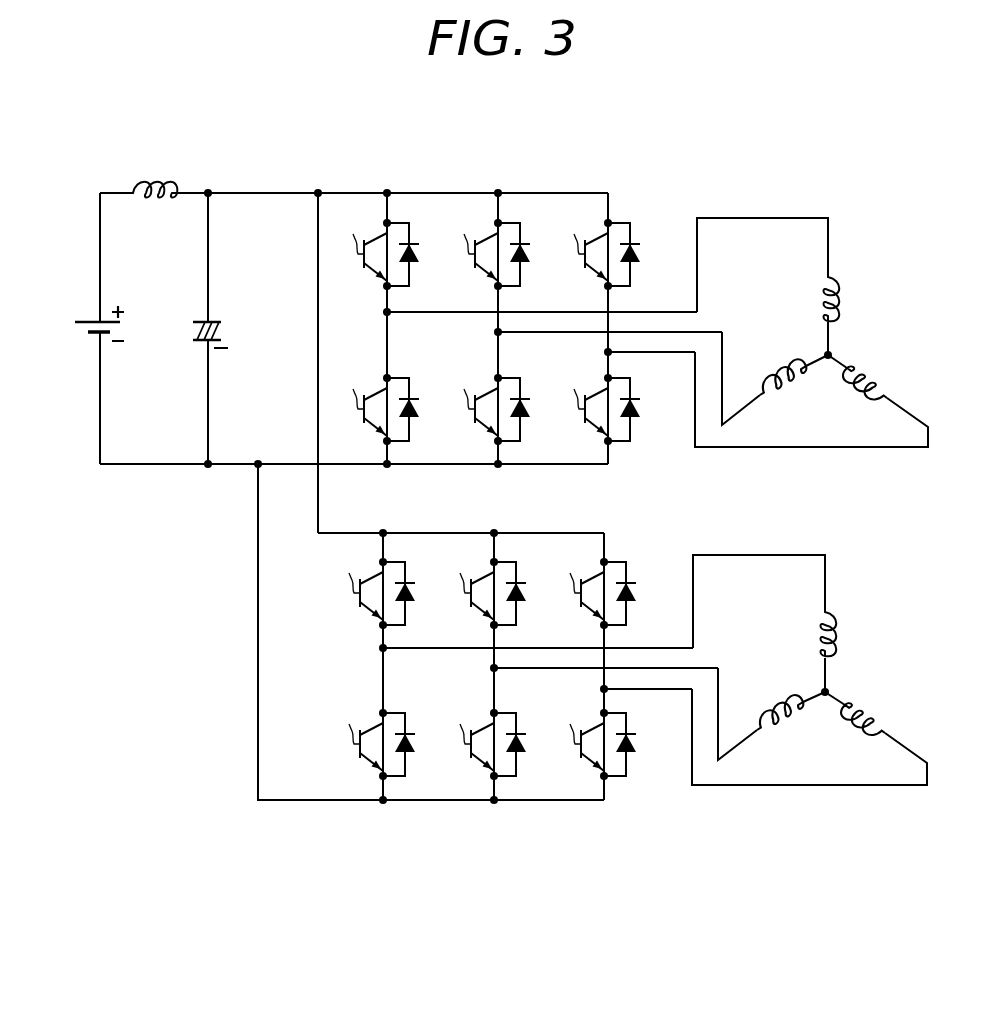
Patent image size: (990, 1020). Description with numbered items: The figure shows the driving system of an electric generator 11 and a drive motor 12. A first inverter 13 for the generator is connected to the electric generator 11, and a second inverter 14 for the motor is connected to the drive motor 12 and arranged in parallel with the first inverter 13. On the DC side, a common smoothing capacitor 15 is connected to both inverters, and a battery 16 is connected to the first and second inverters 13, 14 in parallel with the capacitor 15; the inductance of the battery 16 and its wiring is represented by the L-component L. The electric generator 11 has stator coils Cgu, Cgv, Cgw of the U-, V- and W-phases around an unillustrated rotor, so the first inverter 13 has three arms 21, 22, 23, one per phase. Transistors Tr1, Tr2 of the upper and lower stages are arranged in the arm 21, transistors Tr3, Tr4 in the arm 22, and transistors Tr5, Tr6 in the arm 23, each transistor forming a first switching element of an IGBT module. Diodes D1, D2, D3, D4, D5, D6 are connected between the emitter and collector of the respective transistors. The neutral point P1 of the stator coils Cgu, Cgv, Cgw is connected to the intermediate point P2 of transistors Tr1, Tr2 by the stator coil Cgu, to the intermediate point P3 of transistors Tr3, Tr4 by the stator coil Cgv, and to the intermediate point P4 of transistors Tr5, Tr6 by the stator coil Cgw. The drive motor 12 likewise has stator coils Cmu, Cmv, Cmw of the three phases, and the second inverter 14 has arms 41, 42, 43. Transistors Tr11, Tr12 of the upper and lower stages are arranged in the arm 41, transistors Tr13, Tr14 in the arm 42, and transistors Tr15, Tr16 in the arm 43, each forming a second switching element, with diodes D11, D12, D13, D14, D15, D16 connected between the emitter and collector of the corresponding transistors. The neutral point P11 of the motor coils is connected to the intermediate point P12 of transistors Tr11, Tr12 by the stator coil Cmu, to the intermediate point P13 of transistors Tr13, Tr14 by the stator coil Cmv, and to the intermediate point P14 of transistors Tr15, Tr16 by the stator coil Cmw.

The L-component L is at (140, 178).
The battery 16 is at (89, 319).
The capacitor 15 is at (212, 320).
The first inverter 13 is at (662, 158).
The second inverter 14 is at (307, 838).
The electric generator 11 is at (888, 212).
The drive motor 12 is at (884, 572).
The arm 21 is at (380, 182).
The arm 22 is at (491, 182).
The arm 23 is at (588, 182).
The arm 41 is at (381, 818).
The arm 42 is at (491, 818).
The arm 43 is at (598, 818).
The transistor Tr1 is at (361, 241).
The transistor Tr2 is at (361, 396).
The transistor Tr3 is at (472, 241).
The transistor Tr4 is at (472, 396).
The transistor Tr5 is at (582, 241).
The transistor Tr6 is at (582, 396).
The transistor Tr11 is at (352, 580).
The transistor Tr12 is at (352, 731).
The transistor Tr13 is at (463, 580).
The transistor Tr14 is at (463, 731).
The transistor Tr15 is at (573, 580).
The transistor Tr16 is at (573, 731).
The diode D1 is at (416, 258).
The diode D2 is at (416, 413).
The diode D3 is at (527, 258).
The diode D4 is at (527, 413).
The diode D5 is at (637, 258).
The diode D6 is at (637, 413).
The diode D11 is at (418, 596).
The diode D12 is at (418, 747).
The diode D13 is at (529, 596).
The diode D14 is at (529, 747).
The diode D15 is at (639, 596).
The diode D16 is at (639, 747).
The neutral point P1 is at (833, 354).
The intermediate point P2 is at (387, 312).
The intermediate point P3 is at (498, 332).
The intermediate point P4 is at (612, 353).
The neutral point P11 is at (830, 691).
The intermediate point P12 is at (383, 648).
The intermediate point P13 is at (494, 668).
The intermediate point P14 is at (608, 690).
The stator coil Cgu is at (836, 293).
The stator coil Cgv is at (780, 384).
The stator coil Cgw is at (868, 378).
The stator coil Cmu is at (833, 630).
The stator coil Cmv is at (778, 722).
The stator coil Cmw is at (864, 717).